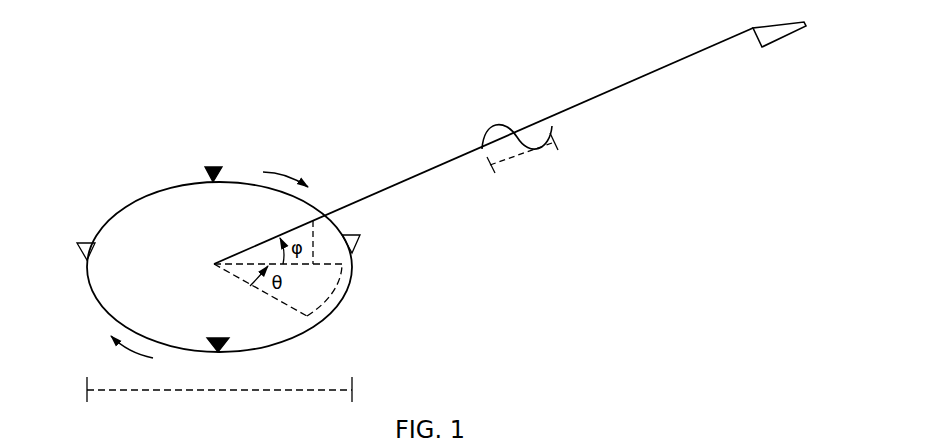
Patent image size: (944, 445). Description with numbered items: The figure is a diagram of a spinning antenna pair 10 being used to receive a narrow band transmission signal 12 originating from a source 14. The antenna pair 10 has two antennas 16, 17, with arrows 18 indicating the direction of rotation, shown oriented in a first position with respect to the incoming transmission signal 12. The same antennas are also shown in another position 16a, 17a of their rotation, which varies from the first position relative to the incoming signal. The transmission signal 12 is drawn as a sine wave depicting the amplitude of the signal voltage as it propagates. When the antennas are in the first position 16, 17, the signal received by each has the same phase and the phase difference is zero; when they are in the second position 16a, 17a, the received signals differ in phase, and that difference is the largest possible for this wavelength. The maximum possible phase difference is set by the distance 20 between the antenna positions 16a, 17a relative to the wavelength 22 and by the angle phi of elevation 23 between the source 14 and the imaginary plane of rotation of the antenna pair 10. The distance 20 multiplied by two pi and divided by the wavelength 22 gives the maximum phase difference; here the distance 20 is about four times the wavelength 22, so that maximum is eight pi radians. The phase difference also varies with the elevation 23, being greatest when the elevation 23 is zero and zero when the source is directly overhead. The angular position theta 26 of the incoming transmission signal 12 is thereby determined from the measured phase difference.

The spinning antenna pair 10 is at (225, 62).
The transmission signal 12 is at (498, 121).
The source 14 is at (510, 143).
The antenna 16 is at (200, 170).
The antenna in another position 16a is at (367, 245).
The antenna 17 is at (230, 339).
The antenna in another position 17a is at (68, 248).
The arrows 18 is at (289, 178).
The distance between the antennas 20 is at (219, 386).
The wavelength 22 is at (522, 158).
The angle phi of elevation 23 is at (325, 242).
The angular position theta 26 is at (278, 290).